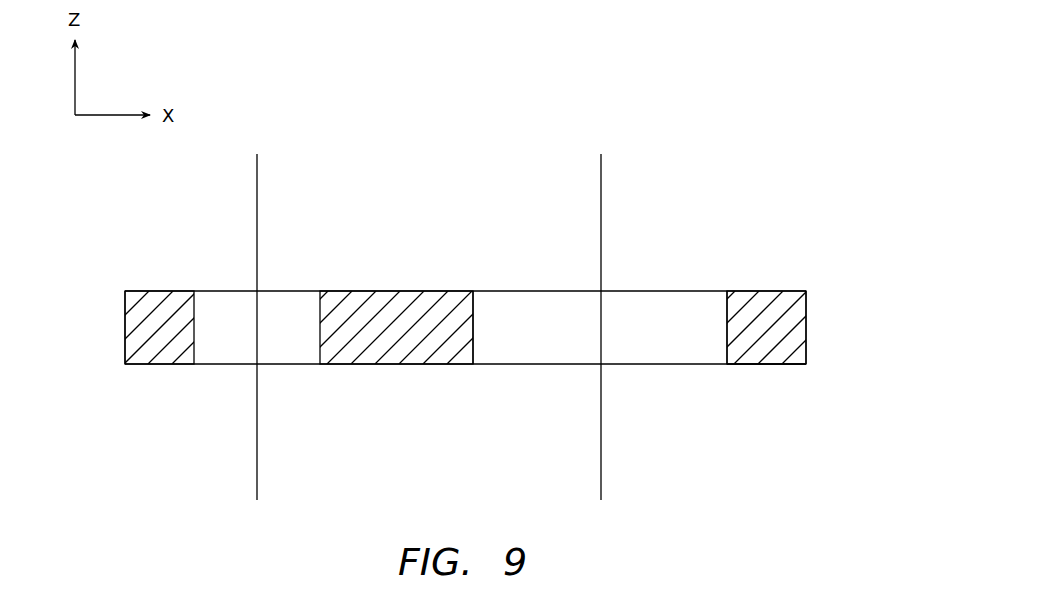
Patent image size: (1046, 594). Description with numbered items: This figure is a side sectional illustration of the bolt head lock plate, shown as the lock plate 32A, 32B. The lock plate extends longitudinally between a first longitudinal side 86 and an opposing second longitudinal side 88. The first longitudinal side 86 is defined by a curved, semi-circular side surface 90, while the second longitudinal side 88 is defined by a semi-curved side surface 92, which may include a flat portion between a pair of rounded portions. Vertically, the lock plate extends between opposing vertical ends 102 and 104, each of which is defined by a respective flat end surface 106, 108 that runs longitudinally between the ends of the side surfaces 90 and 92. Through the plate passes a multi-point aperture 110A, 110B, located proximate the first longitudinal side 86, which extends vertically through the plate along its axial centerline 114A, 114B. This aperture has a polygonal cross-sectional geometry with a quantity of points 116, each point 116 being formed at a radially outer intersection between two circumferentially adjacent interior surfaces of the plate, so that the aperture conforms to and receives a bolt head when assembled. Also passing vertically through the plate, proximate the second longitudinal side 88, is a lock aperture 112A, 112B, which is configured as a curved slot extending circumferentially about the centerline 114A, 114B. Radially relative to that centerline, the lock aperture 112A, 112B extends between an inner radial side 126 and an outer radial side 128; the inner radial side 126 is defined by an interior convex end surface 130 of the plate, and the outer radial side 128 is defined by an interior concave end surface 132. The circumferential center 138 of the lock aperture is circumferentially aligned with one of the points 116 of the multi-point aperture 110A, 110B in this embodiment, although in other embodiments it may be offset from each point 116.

The lock plate 32A is at (461, 276).
The lock plate 32B is at (757, 130).
The circumferential center of the lock aperture 138 is at (256, 171).
The axial centerline of the multi-point aperture 114A is at (502, 323).
The axial centerline of the multi-point aperture 114B is at (600, 168).
The outer radial side of the lock aperture 128 is at (148, 294).
The interior concave end surface 132 is at (195, 320).
The inner radial side of the lock aperture 126 is at (387, 292).
The interior convex end surface 130 is at (320, 320).
The point 116 is at (473, 320).
The lock plate vertical end 104 is at (758, 281).
The end surface 108 is at (763, 291).
The first longitudinal side 86 is at (841, 308).
The curved side surface 90 is at (806, 327).
The semi-curved side surface 92 is at (86, 349).
The second longitudinal side 88 is at (125, 328).
The lock aperture 112A is at (185, 370).
The lock aperture 112B is at (217, 353).
The multi-point aperture 110A is at (531, 372).
The multi-point aperture 110B is at (537, 351).
The lock plate vertical end 102 is at (759, 406).
The end surface 106 is at (765, 364).